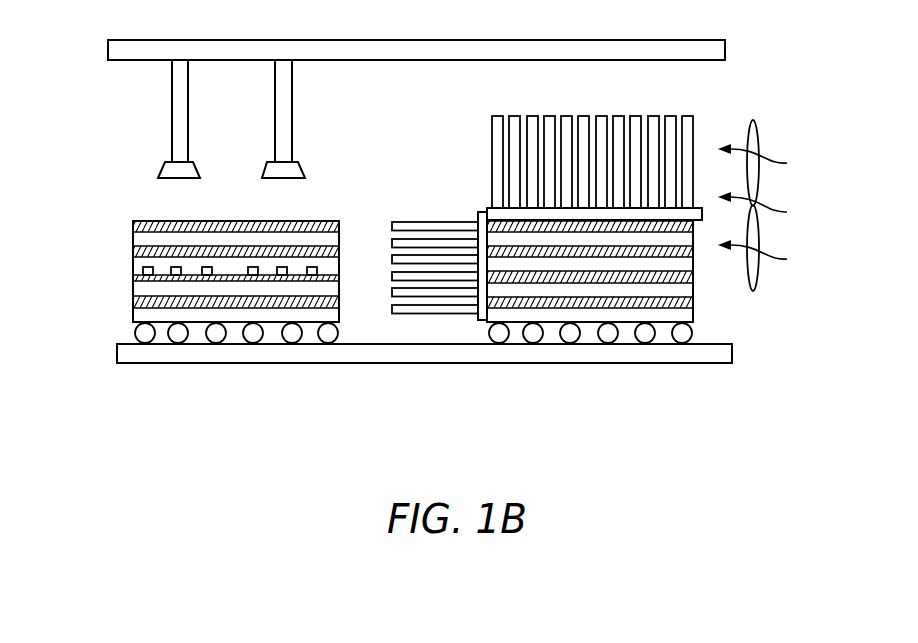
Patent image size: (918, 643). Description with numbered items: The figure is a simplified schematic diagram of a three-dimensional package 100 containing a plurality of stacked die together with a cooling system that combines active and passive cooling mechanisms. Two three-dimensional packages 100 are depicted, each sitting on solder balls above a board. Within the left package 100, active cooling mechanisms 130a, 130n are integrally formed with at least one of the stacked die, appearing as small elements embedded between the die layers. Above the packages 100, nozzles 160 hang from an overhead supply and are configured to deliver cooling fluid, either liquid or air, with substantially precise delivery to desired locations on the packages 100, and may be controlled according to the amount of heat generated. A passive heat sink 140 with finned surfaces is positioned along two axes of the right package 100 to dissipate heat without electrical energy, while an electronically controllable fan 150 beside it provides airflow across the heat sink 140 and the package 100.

The three-dimensional package 100 is at (740, 311).
The active cooling mechanism 130a is at (148, 277).
The active cooling mechanism 130n is at (313, 277).
The heat sink 140 is at (461, 221).
The fan 150 is at (757, 177).
The nozzle 160 is at (171, 130).